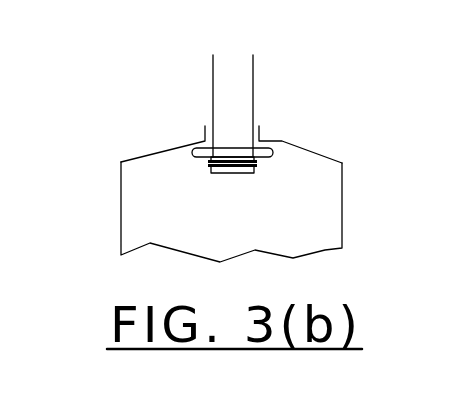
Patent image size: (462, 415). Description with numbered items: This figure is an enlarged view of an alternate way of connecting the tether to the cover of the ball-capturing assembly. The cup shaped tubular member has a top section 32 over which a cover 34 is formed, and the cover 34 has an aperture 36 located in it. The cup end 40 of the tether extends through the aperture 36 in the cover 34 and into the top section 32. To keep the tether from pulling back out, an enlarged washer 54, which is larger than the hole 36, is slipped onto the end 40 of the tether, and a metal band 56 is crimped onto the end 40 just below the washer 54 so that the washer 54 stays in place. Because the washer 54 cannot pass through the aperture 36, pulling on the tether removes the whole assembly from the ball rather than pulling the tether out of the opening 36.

The top section 32 is at (342, 222).
The cover 34 is at (307, 150).
The aperture 36 is at (258, 125).
The cup end 40 is at (237, 175).
The enlarged washer 54 is at (198, 147).
The metal band 56 is at (208, 162).